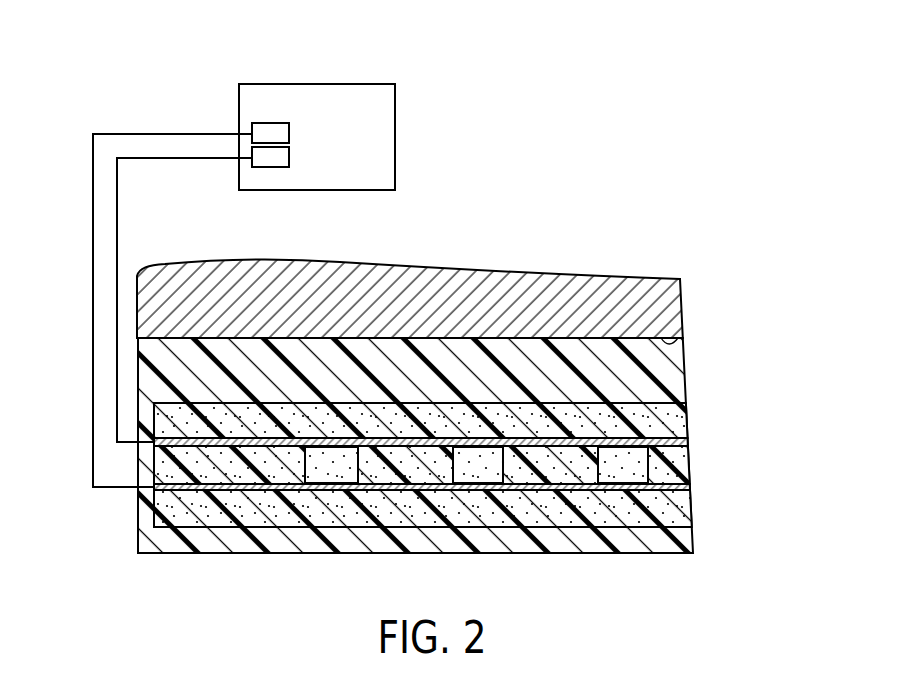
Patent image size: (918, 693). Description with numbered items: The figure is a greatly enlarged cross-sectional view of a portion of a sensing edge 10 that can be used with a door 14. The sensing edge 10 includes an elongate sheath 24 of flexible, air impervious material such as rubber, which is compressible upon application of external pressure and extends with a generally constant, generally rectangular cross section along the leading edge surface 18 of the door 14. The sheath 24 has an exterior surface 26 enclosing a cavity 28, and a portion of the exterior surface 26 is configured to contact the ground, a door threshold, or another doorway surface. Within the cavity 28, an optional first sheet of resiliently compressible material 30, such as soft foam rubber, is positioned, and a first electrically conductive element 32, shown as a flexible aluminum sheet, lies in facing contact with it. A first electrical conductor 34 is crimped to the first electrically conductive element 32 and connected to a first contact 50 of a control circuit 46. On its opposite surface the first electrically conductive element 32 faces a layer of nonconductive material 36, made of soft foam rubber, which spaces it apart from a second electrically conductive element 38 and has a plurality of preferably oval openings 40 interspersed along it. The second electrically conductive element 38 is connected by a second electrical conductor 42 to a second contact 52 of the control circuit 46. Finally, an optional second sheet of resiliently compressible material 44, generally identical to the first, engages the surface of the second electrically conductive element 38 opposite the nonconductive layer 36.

The sensing edge 10 is at (770, 286).
The door 14 is at (552, 292).
The leading edge surface 18 is at (683, 342).
The elongate sheath 24 is at (674, 380).
The exterior surface 26 is at (178, 555).
The cavity 28 is at (152, 507).
The first sheet of resiliently compressible material 30 is at (676, 425).
The first electrically conductive element 32 is at (684, 436).
The first electrical conductor 34 is at (117, 228).
The layer of nonconductive material 36 is at (684, 468).
The second electrically conductive element 38 is at (686, 487).
The openings 40 is at (342, 467).
The second electrical conductor 42 is at (93, 280).
The second sheet of resiliently compressible material 44 is at (690, 512).
The control circuit 46 is at (325, 84).
The first contact 50 is at (289, 157).
The second contact 52 is at (289, 130).